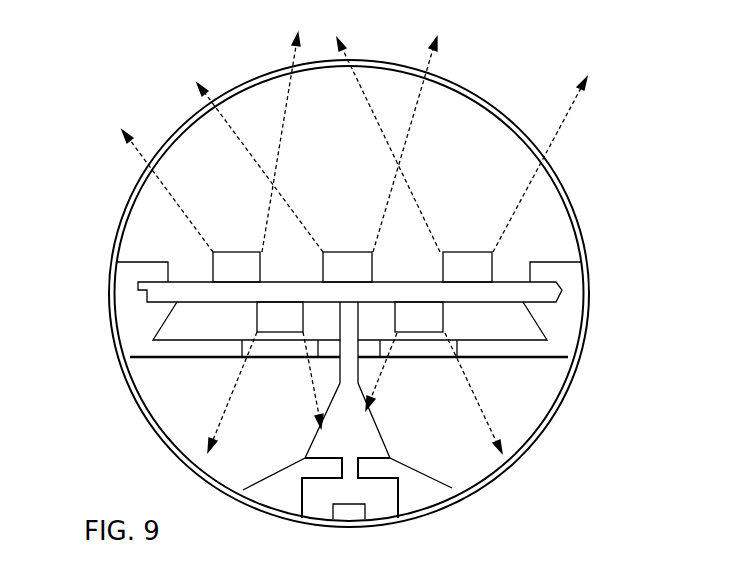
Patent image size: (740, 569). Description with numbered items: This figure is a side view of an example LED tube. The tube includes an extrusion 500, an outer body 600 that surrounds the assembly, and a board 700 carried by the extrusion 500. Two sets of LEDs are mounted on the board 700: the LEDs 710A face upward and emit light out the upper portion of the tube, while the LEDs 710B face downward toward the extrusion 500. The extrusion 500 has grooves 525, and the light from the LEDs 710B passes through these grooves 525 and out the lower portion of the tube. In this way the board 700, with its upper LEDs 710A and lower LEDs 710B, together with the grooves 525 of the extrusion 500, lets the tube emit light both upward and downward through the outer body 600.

The extrusion 500 is at (535, 353).
The grooves 525 is at (290, 353).
The outer body 600 is at (590, 262).
The board 700 is at (146, 291).
The LEDs 710A is at (473, 252).
The LEDs 710B is at (420, 332).